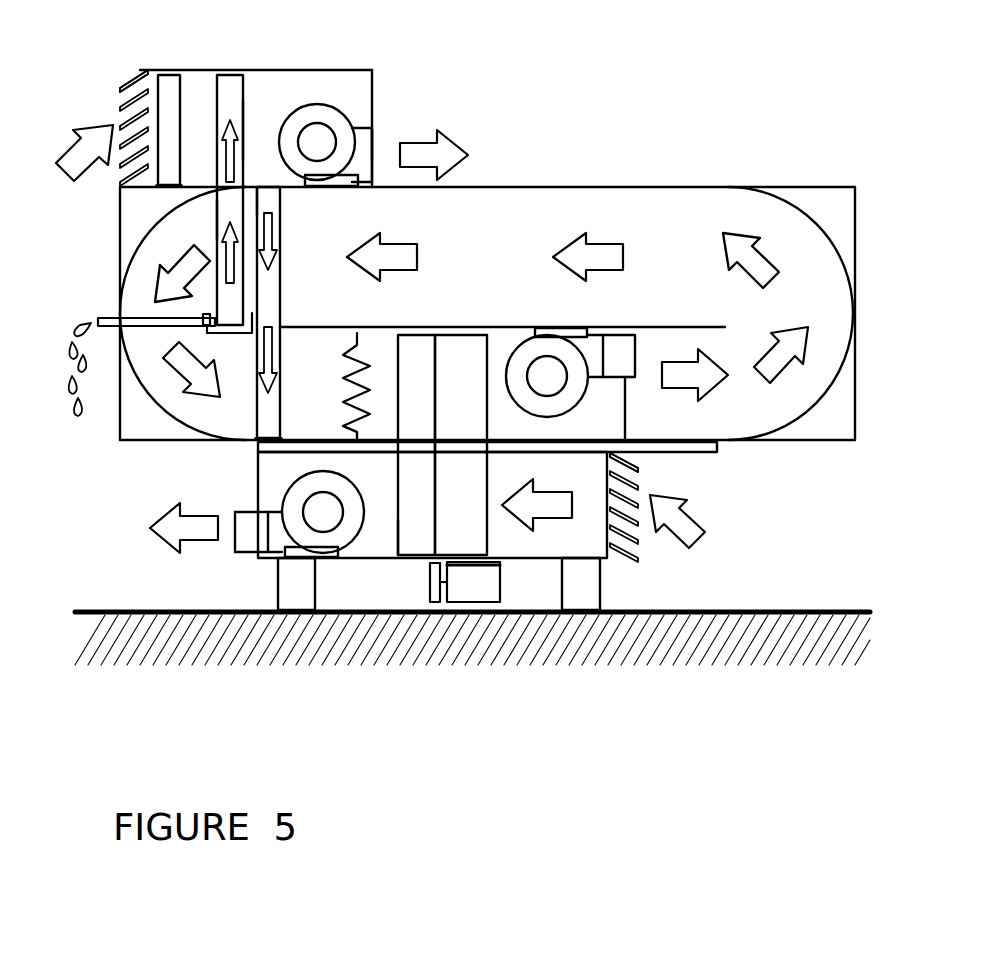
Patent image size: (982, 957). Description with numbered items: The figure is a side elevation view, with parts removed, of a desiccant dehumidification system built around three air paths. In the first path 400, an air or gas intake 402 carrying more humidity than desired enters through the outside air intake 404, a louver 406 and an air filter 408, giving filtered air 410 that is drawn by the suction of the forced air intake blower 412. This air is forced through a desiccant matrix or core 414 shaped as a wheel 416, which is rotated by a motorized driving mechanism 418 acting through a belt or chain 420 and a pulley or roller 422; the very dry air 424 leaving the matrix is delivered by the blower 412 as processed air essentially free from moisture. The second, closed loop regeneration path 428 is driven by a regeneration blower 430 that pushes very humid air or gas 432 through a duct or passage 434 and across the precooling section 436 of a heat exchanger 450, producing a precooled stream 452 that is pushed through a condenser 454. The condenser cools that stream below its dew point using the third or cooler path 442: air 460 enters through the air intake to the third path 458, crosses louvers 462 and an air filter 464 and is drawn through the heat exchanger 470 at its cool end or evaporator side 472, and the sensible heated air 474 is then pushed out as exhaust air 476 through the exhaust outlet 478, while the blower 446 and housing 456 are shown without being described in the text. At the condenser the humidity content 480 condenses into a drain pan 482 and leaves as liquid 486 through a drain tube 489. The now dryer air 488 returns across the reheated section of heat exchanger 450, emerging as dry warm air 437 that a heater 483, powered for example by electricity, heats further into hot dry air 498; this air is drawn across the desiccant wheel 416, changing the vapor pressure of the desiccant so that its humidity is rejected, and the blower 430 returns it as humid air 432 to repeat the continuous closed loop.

The first path 400 is at (567, 540).
The air or gas intake 402 is at (692, 538).
The outside air intake 404 is at (648, 481).
The louver 406 is at (636, 541).
The air filter 408 is at (607, 561).
The filtered air 410 is at (565, 512).
The forced air intake blower 412 is at (283, 540).
The desiccant matrix or core 414 is at (415, 538).
The wheel 416 is at (405, 488).
The motorized driving mechanism 418 is at (462, 597).
The belt or chain 420 is at (438, 500).
The pulley or roller 422 is at (430, 590).
The very dry air 424 is at (172, 522).
The closed loop regeneration path 428 is at (648, 215).
The regeneration blower 430 is at (561, 410).
The very humid air or gas 432 is at (403, 260).
The duct or passage 434 is at (505, 243).
The precooling section 436 is at (275, 228).
The dry and warm air 437 is at (306, 340).
The third path or cooler path 442 is at (350, 78).
The upper blower 446 is at (343, 133).
The heat exchanger 450 is at (270, 303).
The precooled air or gas stream 452 is at (250, 202).
The condenser 454 is at (228, 213).
The upper housing top 456 is at (312, 82).
The air intake to the third path 458 is at (115, 107).
The air 460 is at (70, 165).
The louvers 462 is at (133, 72).
The air filter 464 is at (169, 82).
The heat exchanger 470 is at (228, 72).
The cool end or evaporator side 472 is at (229, 108).
The sensible heated air 474 is at (252, 132).
The exhaust air or gas 476 is at (444, 142).
The exhaust outlet 478 is at (392, 135).
The humidity content 480 is at (228, 293).
The drain pan 482 is at (222, 328).
The heater 483 is at (353, 396).
The liquid 486 is at (66, 394).
The air or gas 488 is at (188, 385).
The drain tube 489 is at (100, 317).
The heated air 498 is at (381, 347).